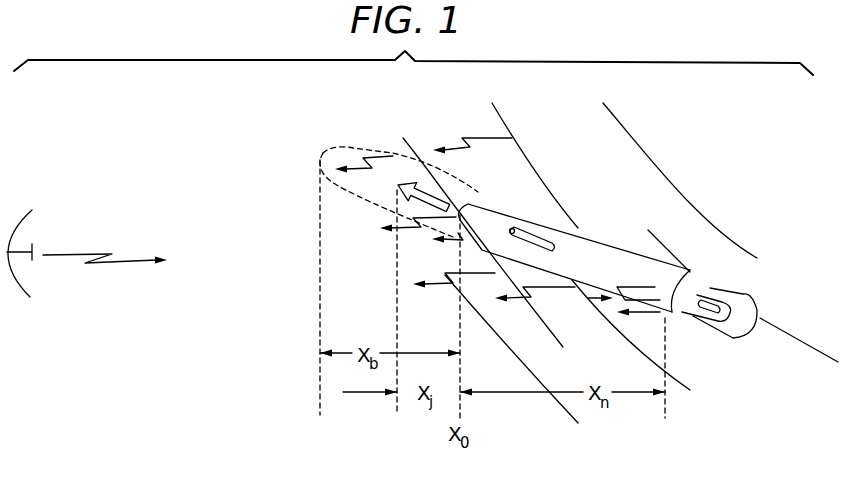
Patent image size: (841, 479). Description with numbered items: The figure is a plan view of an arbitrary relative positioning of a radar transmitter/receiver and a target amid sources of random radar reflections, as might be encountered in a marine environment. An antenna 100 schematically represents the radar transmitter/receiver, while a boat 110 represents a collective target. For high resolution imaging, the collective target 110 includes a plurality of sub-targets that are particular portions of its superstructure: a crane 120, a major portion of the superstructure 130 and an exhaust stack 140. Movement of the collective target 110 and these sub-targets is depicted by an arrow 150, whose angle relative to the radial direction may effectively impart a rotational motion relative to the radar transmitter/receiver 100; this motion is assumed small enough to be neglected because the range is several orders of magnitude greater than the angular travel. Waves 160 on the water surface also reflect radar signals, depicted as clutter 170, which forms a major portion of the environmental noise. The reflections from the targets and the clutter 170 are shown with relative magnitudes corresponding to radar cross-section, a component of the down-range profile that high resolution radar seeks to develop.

The antenna 100 is at (30, 206).
The boat 110 is at (628, 247).
The crane 120 is at (514, 230).
The major portion of the superstructure 130 is at (697, 278).
The exhaust stack 140 is at (748, 293).
The arrow 150 is at (461, 212).
The waves 160 is at (655, 166).
The clutter 170 is at (462, 138).